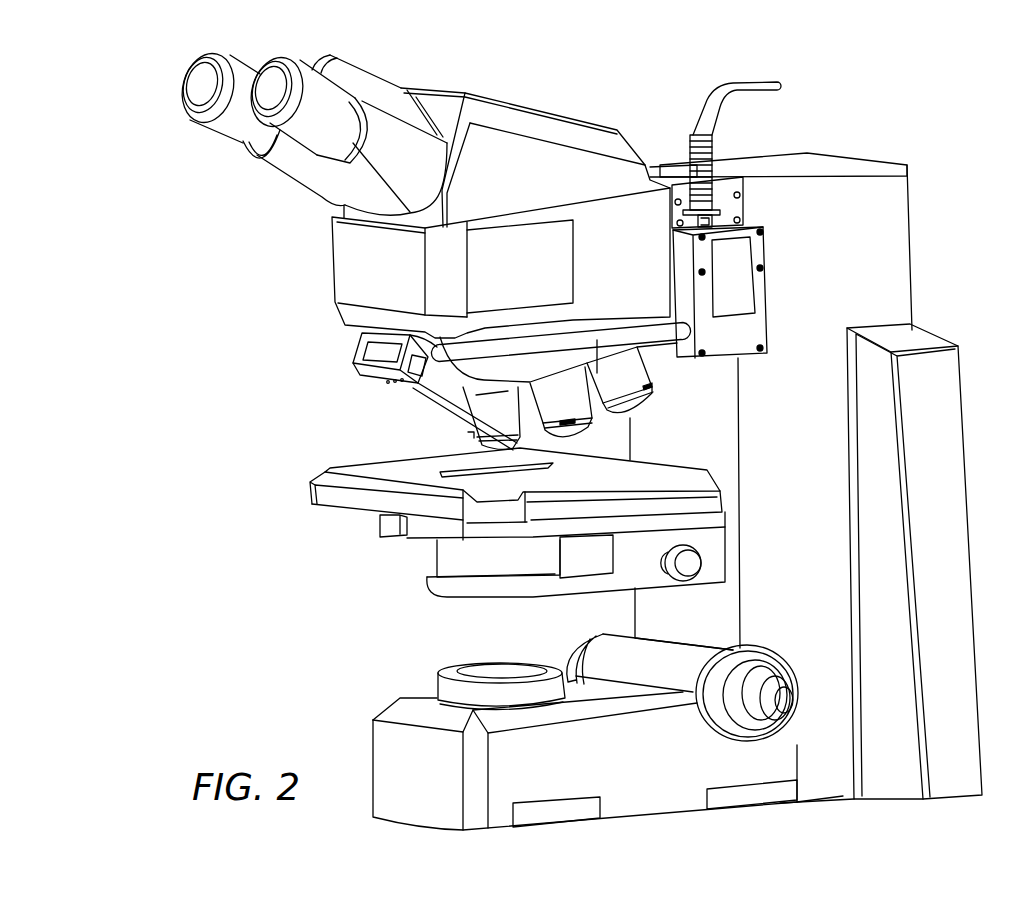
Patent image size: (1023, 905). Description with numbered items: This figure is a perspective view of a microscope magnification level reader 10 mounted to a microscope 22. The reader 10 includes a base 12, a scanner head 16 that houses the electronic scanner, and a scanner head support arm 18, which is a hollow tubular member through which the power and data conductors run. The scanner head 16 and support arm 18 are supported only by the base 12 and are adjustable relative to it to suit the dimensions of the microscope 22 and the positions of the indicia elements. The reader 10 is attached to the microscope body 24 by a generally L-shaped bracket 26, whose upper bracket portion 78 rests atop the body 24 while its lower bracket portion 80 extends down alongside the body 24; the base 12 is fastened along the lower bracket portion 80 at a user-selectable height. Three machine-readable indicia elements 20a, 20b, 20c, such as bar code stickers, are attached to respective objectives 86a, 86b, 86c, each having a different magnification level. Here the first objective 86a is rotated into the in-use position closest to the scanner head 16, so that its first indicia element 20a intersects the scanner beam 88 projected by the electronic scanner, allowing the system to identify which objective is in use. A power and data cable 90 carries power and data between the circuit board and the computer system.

The microscope magnification level reader 10 is at (736, 387).
The base 12 is at (768, 322).
The scanner head 16 is at (357, 360).
The scanner head support arm 18 is at (595, 345).
The first indicia element 20a is at (452, 440).
The second indicia element 20b is at (567, 411).
The third indicia element 20c is at (637, 376).
The microscope 22 is at (974, 158).
The microscope body 24 is at (840, 162).
The bracket 26 is at (669, 154).
The upper bracket portion 78 is at (715, 165).
The lower bracket portion 80 is at (745, 203).
The first objective 86a is at (512, 416).
The second objective 86b is at (580, 438).
The third objective 86c is at (653, 407).
The scanner beam 88 is at (457, 430).
The power and data cable 90 is at (730, 88).